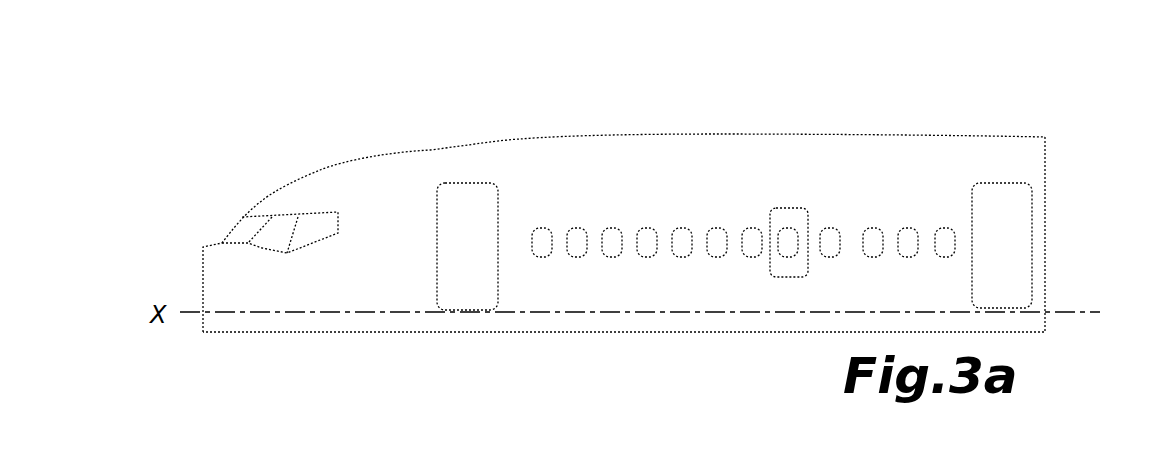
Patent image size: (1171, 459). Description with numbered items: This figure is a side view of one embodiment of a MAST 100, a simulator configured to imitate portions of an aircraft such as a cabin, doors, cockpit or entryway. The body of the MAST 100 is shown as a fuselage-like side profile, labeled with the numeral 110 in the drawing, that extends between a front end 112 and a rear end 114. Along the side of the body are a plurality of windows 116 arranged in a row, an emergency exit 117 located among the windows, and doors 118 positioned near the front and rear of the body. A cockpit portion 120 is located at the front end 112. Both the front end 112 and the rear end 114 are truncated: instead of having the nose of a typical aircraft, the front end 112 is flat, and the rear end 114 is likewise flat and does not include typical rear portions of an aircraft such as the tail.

The MAST 100 is at (466, 82).
The fuselage 110 is at (634, 184).
The front end 112 is at (203, 272).
The rear end 114 is at (1047, 165).
The windows 116 is at (555, 233).
The emergency exits 117 is at (783, 208).
The doors 118 is at (464, 198).
The cockpit portion 120 is at (273, 226).